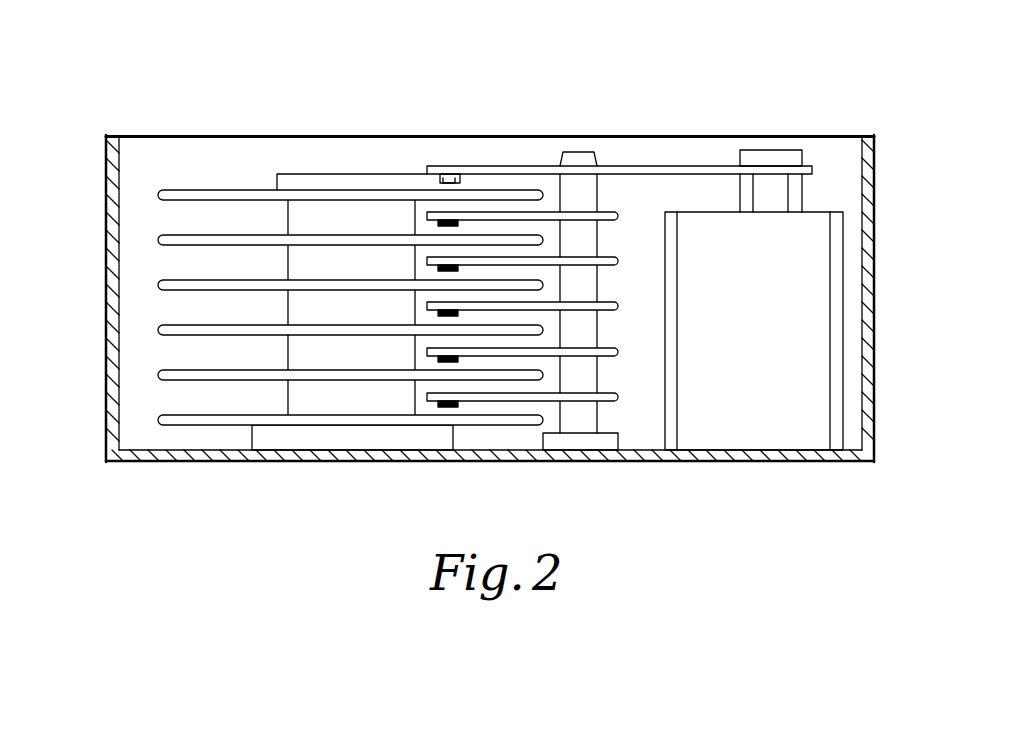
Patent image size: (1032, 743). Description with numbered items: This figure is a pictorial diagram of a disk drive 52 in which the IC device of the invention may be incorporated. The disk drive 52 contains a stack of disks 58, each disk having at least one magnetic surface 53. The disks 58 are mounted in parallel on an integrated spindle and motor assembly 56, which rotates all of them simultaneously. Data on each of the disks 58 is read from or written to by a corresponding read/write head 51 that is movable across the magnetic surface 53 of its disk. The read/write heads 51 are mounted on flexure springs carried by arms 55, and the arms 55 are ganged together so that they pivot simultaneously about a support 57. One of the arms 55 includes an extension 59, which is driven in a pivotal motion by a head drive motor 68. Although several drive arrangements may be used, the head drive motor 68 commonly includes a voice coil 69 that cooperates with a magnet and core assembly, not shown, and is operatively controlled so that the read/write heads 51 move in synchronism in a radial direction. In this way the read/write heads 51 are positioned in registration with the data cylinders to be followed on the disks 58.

The read/write head 51 is at (450, 174).
The disk drive 52 is at (771, 84).
The magnetic surface 53 is at (200, 190).
The arm 55 is at (603, 212).
The integrated spindle and motor assembly 56 is at (338, 393).
The support 57 is at (578, 413).
The disk 58 is at (157, 198).
The extension 59 is at (662, 165).
The head drive motor 68 is at (747, 392).
The voice coil 69 is at (805, 195).